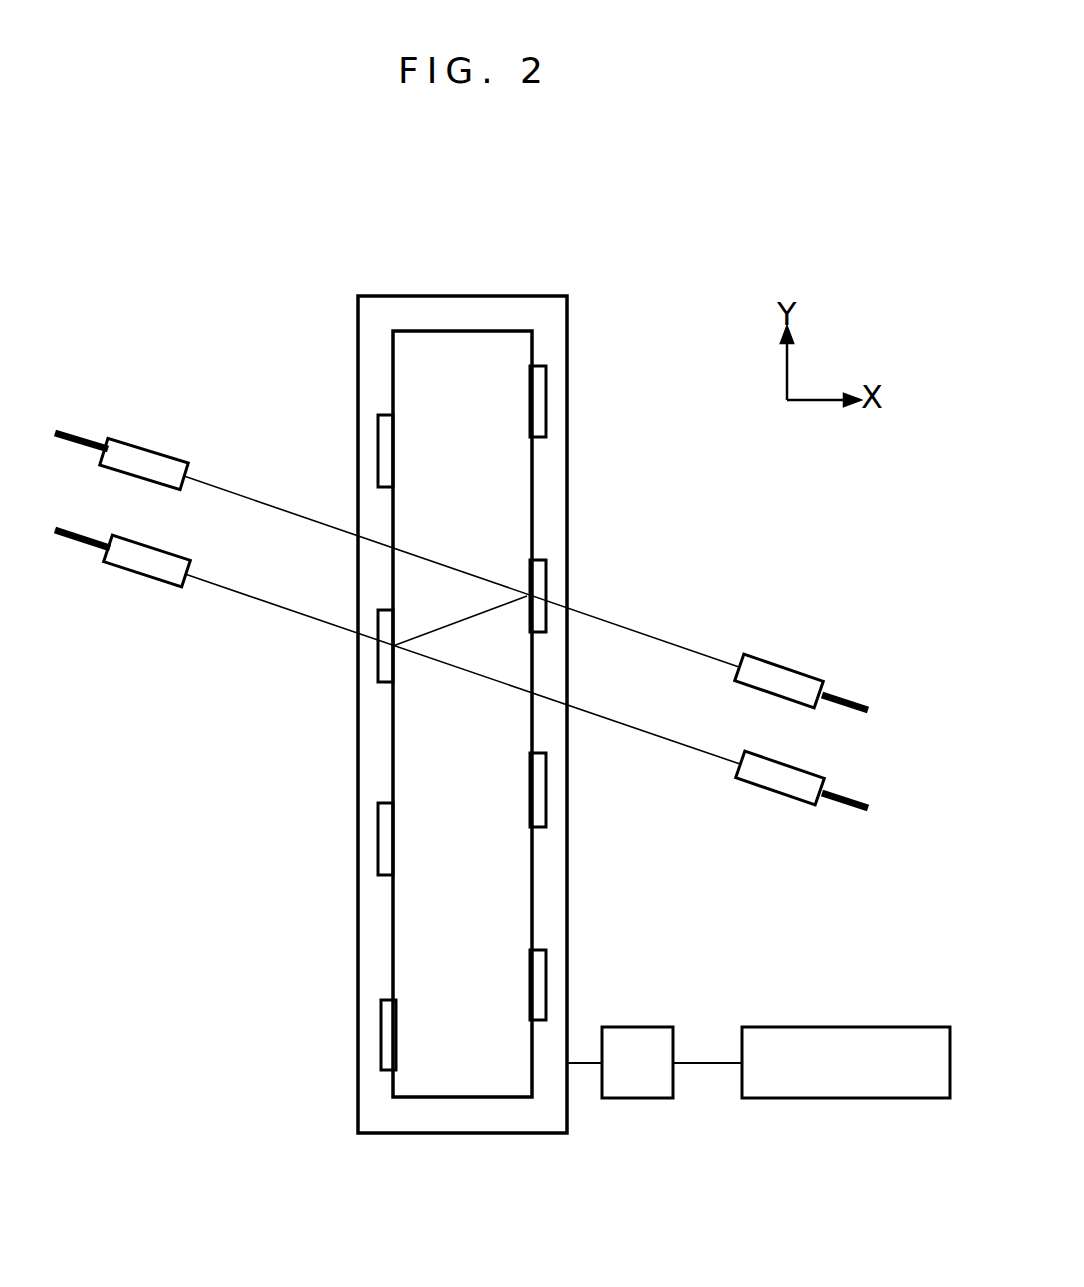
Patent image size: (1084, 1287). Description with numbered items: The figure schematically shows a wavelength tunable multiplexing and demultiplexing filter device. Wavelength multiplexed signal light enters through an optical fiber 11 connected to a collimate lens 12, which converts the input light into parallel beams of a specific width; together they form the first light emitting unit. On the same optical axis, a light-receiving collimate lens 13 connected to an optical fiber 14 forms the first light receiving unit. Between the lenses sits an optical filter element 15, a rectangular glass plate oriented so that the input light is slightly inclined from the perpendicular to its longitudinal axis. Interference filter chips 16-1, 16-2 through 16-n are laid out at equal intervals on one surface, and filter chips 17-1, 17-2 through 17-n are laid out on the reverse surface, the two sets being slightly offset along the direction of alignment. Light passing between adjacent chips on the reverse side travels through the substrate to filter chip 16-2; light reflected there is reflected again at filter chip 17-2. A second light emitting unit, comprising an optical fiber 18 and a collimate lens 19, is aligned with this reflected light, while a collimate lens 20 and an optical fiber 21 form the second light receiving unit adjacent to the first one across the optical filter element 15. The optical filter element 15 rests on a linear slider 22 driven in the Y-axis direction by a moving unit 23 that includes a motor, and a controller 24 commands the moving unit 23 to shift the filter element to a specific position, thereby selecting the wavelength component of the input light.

The optical fiber 11 is at (76, 432).
The collimate lens 12 is at (147, 448).
The collimate lens 13 is at (759, 654).
The optical fiber 14 is at (839, 694).
The optical filter element 15 is at (486, 331).
The filter chip 16-1 is at (547, 392).
The filter chip 16-2 is at (547, 568).
The filter chip 16-n is at (548, 962).
The filter chip 17-1 is at (378, 448).
The filter chip 17-2 is at (378, 657).
The filter chip 17-n is at (381, 1020).
The optical fiber 18 is at (80, 548).
The collimate lens 19 is at (160, 585).
The collimate lens 20 is at (770, 790).
The optical fiber 21 is at (846, 810).
The linear slider 22 is at (399, 296).
The moving unit 23 is at (637, 1099).
The controller 24 is at (847, 1099).